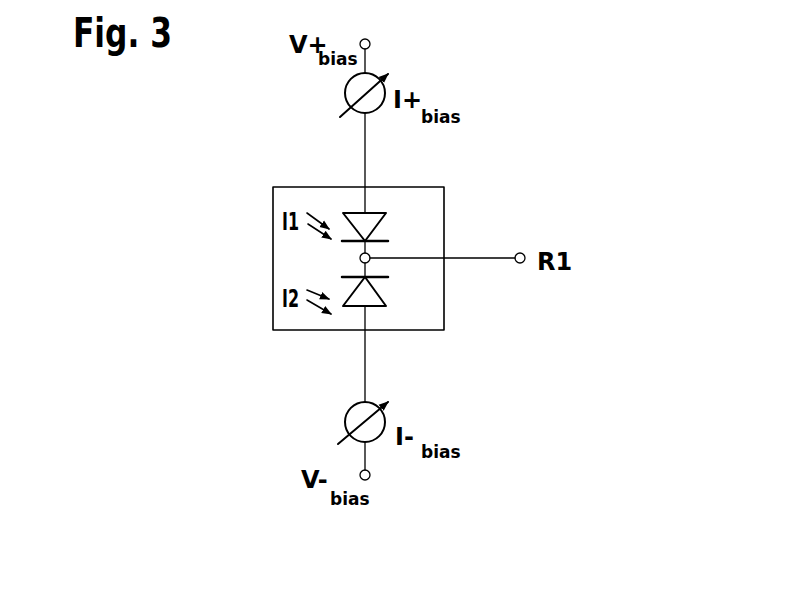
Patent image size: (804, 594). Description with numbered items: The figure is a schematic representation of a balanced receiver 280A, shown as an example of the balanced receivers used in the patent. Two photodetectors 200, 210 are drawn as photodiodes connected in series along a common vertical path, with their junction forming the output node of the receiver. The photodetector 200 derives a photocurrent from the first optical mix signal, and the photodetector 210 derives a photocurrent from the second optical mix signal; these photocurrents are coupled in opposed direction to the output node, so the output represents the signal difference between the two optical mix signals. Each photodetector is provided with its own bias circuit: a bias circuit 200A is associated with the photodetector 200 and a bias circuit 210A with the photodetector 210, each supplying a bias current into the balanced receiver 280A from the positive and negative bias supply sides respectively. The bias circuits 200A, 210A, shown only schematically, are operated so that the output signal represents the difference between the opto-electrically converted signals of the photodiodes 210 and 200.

The bias circuit 200A is at (348, 92).
The bias circuit 210A is at (348, 420).
The photodetector 200 is at (386, 213).
The photodetector 210 is at (386, 306).
The balanced receiver 280A is at (587, 135).